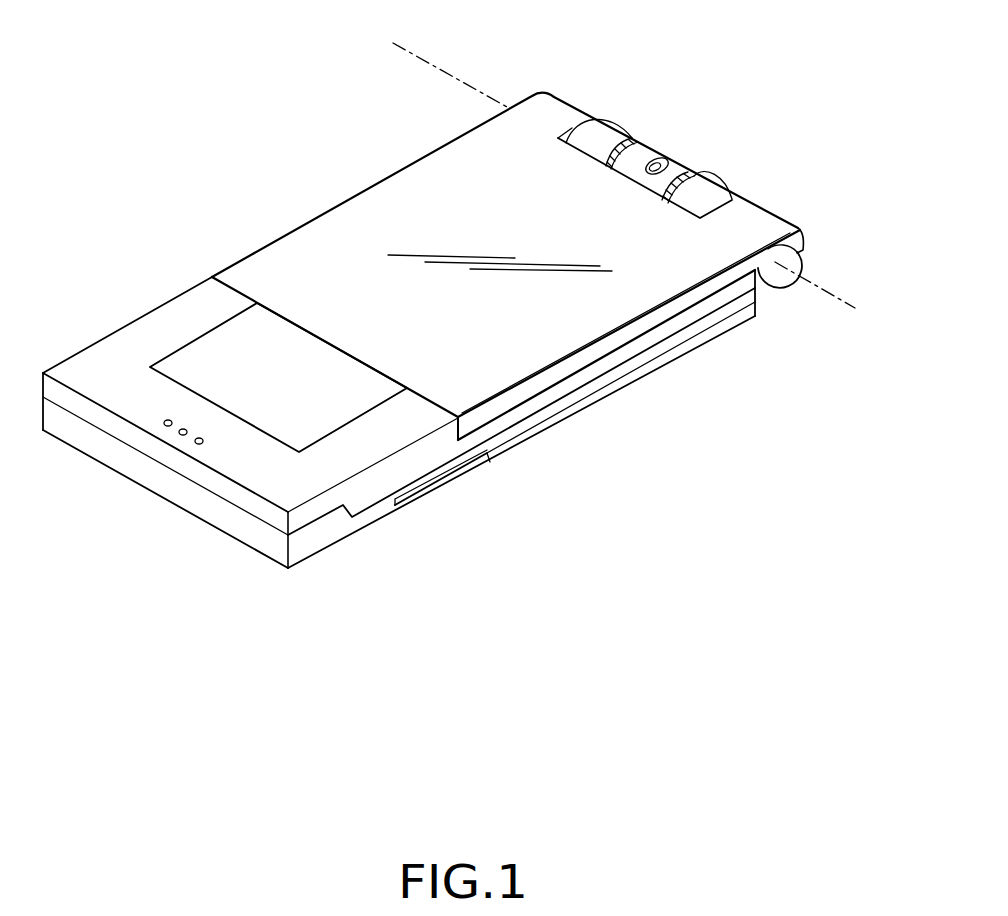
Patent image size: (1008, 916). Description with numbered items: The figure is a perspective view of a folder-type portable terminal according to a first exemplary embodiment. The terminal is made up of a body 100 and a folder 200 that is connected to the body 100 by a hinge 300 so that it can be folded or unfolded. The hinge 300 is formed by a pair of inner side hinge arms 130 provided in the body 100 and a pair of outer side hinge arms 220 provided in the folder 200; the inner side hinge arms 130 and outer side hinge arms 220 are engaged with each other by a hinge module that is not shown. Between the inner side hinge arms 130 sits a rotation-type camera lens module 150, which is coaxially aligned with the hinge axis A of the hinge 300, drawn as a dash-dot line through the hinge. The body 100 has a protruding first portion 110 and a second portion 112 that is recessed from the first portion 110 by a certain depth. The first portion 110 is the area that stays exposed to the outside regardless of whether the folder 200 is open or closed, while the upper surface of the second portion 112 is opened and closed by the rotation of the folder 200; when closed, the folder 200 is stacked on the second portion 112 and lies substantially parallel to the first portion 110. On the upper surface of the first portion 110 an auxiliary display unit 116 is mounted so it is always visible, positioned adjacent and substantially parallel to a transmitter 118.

The body 100 is at (396, 411).
The first portion 110 is at (206, 253).
The second portion 112 is at (603, 403).
The auxiliary display unit 116 is at (290, 418).
The transmitter 118 is at (183, 435).
The folder 200 is at (520, 224).
The outer side hinge arms 220 is at (557, 108).
The inner side hinge arms 130 is at (607, 135).
The rotation-type camera lens module 150 is at (662, 158).
The hinge 300 is at (803, 226).
The hinge axis A is at (855, 308).